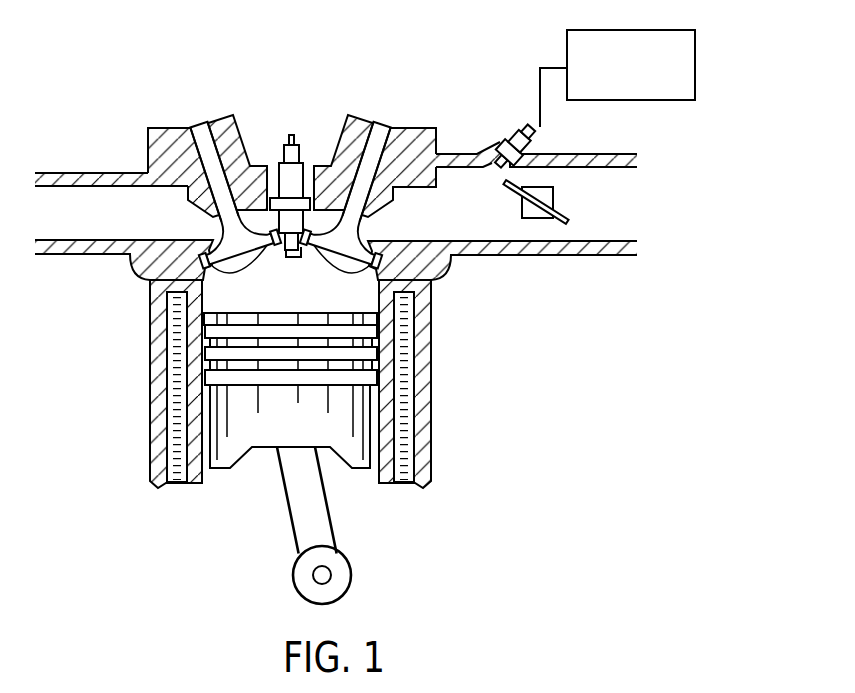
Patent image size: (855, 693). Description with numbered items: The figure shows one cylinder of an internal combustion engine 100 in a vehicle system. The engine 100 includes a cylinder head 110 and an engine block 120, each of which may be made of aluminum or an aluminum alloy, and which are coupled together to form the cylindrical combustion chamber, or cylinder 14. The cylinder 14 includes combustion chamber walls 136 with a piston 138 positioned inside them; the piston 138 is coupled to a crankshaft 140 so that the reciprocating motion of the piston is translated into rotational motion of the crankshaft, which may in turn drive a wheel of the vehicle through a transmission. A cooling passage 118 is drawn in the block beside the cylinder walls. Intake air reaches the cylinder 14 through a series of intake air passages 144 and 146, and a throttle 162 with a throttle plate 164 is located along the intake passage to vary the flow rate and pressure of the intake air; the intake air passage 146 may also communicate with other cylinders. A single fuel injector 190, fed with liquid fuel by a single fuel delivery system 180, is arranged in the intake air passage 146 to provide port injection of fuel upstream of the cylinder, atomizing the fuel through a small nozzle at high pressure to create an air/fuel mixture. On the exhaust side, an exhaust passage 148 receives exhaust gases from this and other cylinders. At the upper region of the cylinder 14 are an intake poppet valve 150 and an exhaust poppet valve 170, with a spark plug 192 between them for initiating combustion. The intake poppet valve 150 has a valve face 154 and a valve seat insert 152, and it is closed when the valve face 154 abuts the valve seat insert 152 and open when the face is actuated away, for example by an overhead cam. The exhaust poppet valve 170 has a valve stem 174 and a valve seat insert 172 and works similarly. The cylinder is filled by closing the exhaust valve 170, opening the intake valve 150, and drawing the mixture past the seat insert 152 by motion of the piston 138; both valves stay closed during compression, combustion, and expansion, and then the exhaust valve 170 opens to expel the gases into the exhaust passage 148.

The internal combustion engine 100 is at (104, 85).
The cylinder head 110 is at (102, 267).
The engine block 120 is at (123, 386).
The cooling sleeve 118 is at (410, 413).
The cylinder 14 is at (303, 299).
The combustion chamber walls 136 is at (205, 482).
The piston 138 is at (267, 437).
The crankshaft 140 is at (299, 589).
The intake air passage 144 is at (617, 210).
The intake air passage 146 is at (483, 214).
The exhaust passage 148 is at (92, 218).
The intake poppet valve 150 is at (372, 111).
The valve seat insert 152 is at (367, 259).
The valve face 154 is at (353, 233).
The exhaust poppet valve 170 is at (199, 114).
The valve seat insert 172 is at (212, 262).
The valve stem 174 is at (227, 232).
The throttle 162 is at (538, 187).
The throttle plate 164 is at (558, 222).
The fuel delivery system 180 is at (627, 30).
The fuel injector 190 is at (517, 131).
The spark plug 192 is at (290, 154).